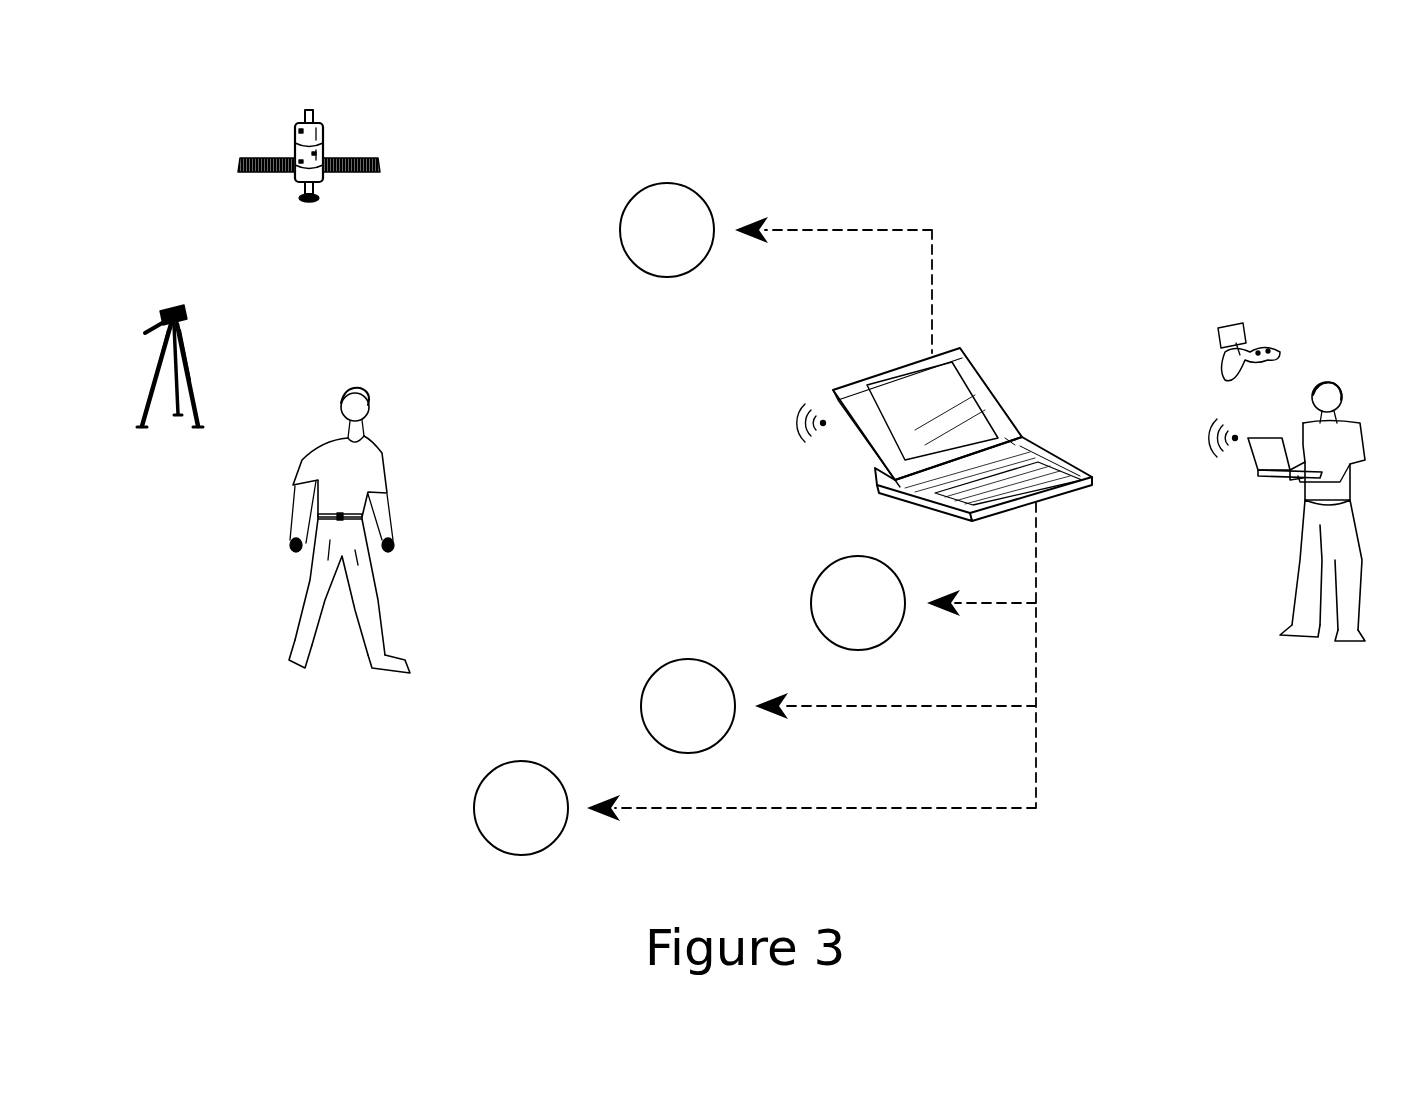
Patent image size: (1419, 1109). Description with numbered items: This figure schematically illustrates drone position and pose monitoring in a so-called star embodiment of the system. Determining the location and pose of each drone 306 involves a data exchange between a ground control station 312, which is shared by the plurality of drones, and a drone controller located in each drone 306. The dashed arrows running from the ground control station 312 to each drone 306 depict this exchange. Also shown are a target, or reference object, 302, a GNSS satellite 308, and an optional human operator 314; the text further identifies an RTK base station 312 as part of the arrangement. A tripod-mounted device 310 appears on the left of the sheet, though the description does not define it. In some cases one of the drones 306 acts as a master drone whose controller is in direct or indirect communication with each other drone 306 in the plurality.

The target 302 is at (378, 447).
The drone 306 is at (755, 519).
The GNSS satellite 308 is at (323, 132).
The tripod-mounted sensor 310 is at (148, 373).
The ground control station 312 is at (895, 370).
The human operator 314 is at (1360, 430).